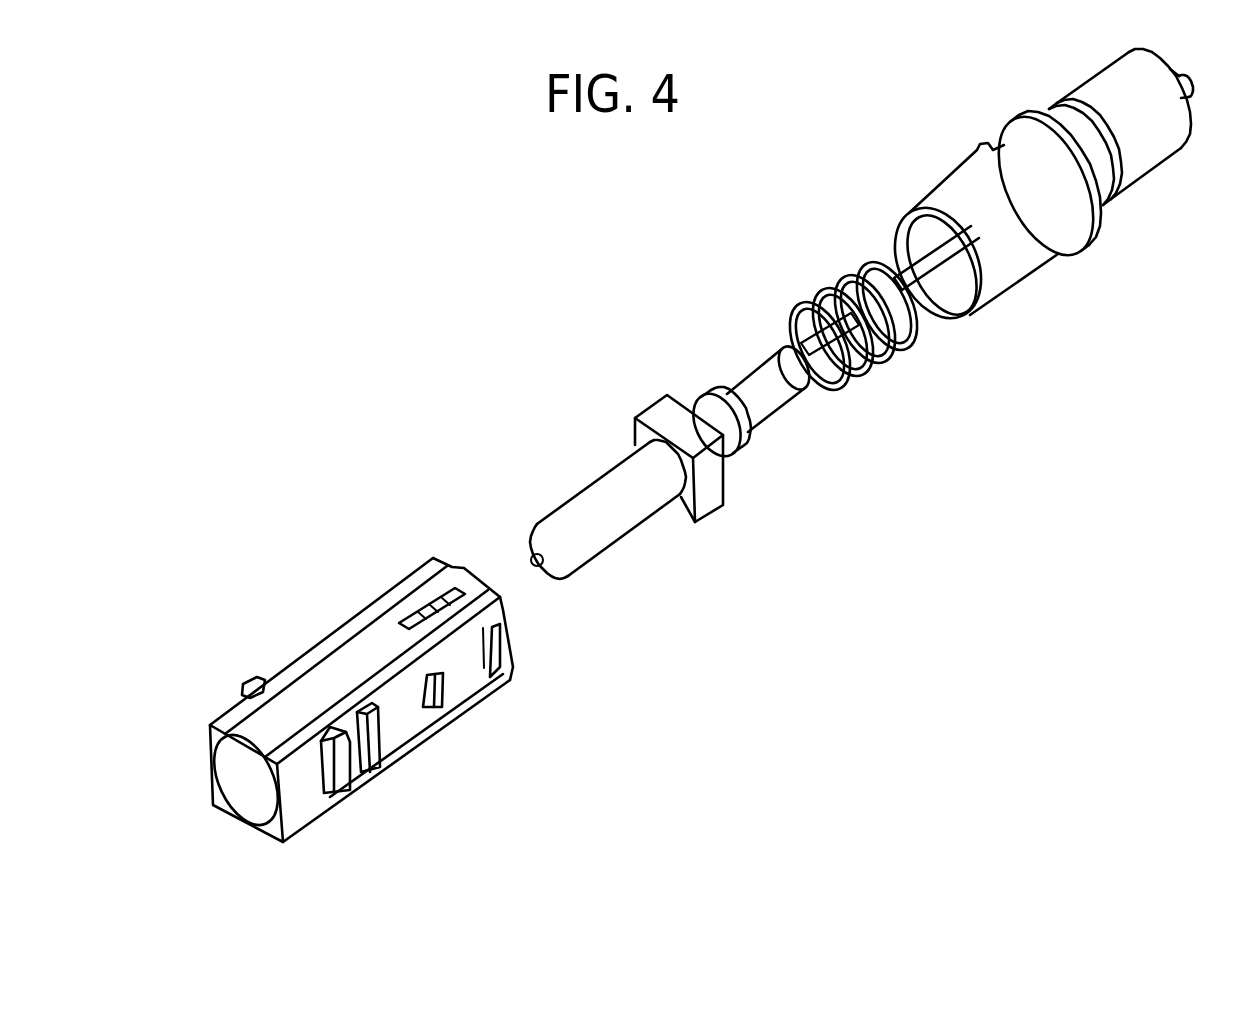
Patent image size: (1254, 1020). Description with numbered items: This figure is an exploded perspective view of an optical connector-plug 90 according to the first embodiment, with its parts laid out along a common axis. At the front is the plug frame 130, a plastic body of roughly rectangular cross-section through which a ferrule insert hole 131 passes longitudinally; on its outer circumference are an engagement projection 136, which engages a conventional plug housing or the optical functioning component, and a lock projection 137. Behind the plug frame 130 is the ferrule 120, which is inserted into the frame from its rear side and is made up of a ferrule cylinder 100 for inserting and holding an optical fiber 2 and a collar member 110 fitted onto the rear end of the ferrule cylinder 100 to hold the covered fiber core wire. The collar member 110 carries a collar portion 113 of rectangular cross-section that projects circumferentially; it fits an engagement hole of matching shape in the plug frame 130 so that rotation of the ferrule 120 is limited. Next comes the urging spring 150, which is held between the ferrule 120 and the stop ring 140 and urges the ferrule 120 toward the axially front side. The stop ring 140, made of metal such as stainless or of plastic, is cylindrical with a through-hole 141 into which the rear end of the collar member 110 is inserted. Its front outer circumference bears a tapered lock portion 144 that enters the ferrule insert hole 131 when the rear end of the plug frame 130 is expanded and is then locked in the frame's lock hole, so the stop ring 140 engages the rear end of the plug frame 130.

The optical connector-plug 90 is at (390, 354).
The plug frame 130 is at (333, 683).
The ferrule insert hole 131 is at (250, 790).
The engagement projection 136 is at (355, 787).
The lock projection 137 is at (437, 715).
The ferrule cylinder 100 is at (617, 522).
The collar portion 113 is at (673, 415).
The collar member 110 is at (768, 402).
The ferrule 120 is at (877, 540).
The urging spring 150 is at (913, 312).
The optical fiber 2 is at (878, 263).
The stop ring 140 is at (1020, 247).
The through-hole 141 is at (970, 318).
The lock portion 144 is at (1082, 240).